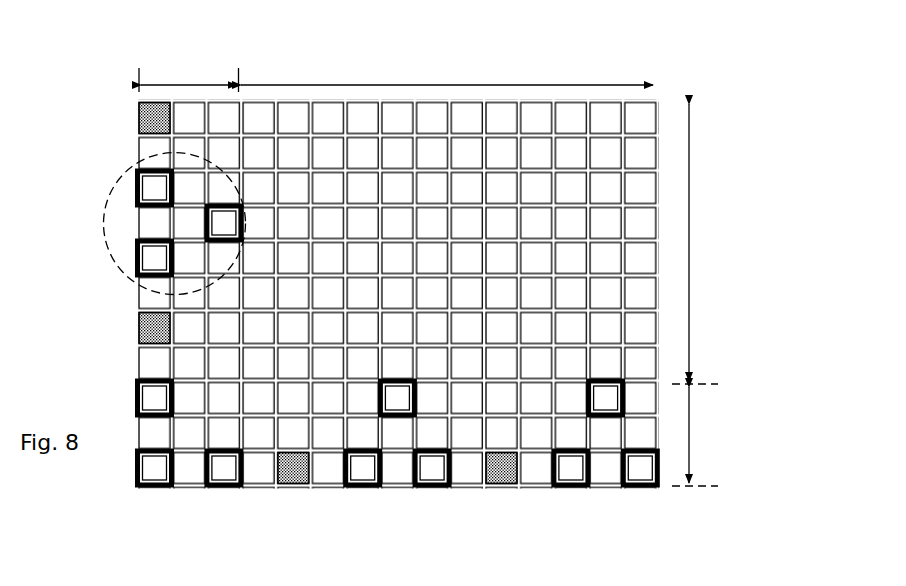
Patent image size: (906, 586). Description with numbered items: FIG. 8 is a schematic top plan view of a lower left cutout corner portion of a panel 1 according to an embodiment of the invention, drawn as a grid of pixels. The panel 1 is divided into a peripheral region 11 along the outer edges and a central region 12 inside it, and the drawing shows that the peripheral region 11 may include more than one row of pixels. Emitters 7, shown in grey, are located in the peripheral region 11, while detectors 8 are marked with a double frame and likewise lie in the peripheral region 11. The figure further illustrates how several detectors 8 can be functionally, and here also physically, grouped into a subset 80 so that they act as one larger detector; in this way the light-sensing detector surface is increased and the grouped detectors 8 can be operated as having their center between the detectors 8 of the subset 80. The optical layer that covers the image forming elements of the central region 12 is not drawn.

The panel 1 is at (695, 90).
The emitters 7 is at (498, 472).
The detectors 8 is at (220, 472).
The subset 80 is at (110, 246).
The peripheral region 11 is at (432, 275).
The central region 12 is at (483, 224).